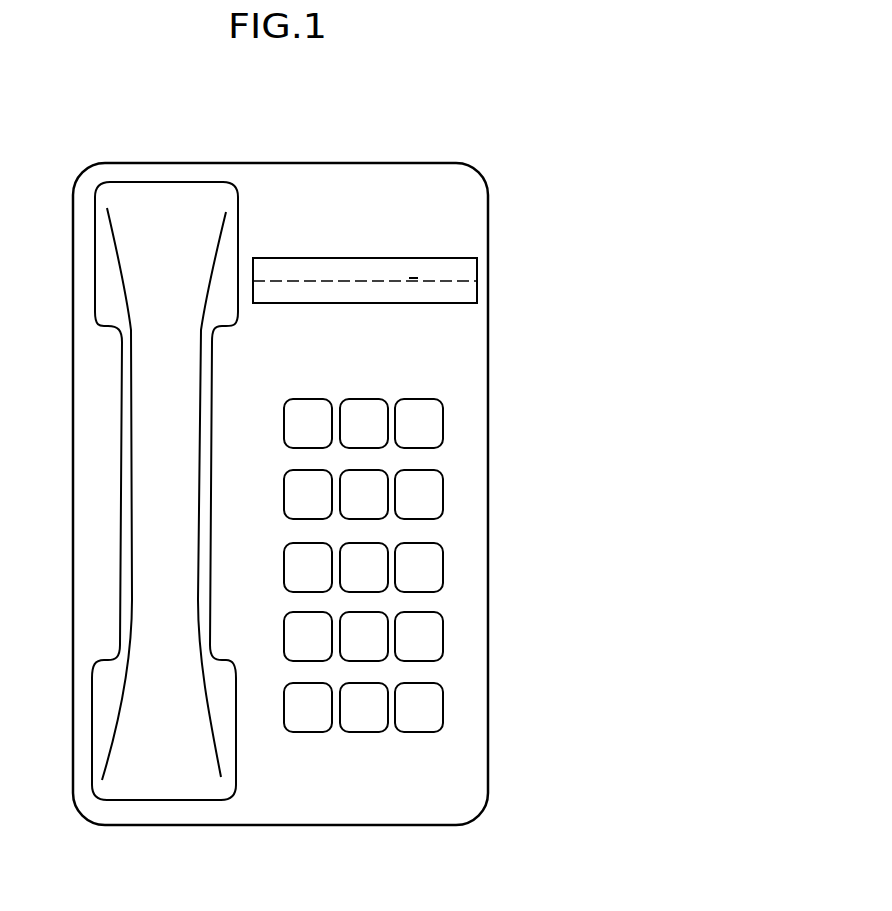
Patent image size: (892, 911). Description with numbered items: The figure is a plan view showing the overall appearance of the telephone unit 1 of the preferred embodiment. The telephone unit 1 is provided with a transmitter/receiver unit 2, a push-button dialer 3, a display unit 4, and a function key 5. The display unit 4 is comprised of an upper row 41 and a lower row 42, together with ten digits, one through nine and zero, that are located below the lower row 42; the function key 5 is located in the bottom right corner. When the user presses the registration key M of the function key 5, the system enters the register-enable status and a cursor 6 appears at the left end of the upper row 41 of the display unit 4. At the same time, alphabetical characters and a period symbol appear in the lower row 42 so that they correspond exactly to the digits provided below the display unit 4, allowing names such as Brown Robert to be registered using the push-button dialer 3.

The telephone unit 1 is at (297, 161).
The transmitter/receiver unit 2 is at (162, 198).
The push-button dialer 3 is at (433, 487).
The display unit 4 is at (383, 297).
The upper row 41 is at (283, 258).
The lower row 42 is at (268, 297).
The function key 5 is at (433, 703).
The cursor 6 is at (413, 277).